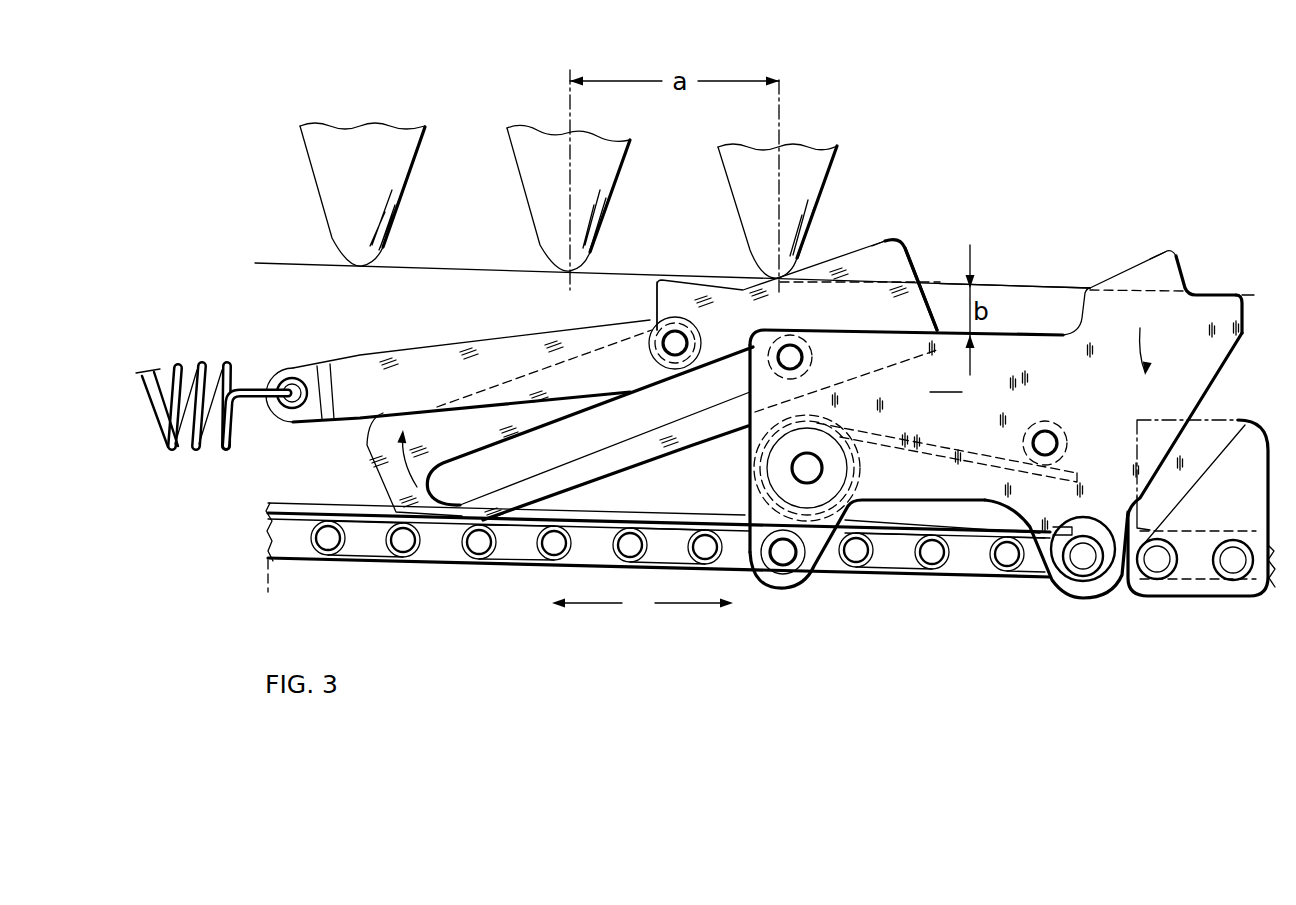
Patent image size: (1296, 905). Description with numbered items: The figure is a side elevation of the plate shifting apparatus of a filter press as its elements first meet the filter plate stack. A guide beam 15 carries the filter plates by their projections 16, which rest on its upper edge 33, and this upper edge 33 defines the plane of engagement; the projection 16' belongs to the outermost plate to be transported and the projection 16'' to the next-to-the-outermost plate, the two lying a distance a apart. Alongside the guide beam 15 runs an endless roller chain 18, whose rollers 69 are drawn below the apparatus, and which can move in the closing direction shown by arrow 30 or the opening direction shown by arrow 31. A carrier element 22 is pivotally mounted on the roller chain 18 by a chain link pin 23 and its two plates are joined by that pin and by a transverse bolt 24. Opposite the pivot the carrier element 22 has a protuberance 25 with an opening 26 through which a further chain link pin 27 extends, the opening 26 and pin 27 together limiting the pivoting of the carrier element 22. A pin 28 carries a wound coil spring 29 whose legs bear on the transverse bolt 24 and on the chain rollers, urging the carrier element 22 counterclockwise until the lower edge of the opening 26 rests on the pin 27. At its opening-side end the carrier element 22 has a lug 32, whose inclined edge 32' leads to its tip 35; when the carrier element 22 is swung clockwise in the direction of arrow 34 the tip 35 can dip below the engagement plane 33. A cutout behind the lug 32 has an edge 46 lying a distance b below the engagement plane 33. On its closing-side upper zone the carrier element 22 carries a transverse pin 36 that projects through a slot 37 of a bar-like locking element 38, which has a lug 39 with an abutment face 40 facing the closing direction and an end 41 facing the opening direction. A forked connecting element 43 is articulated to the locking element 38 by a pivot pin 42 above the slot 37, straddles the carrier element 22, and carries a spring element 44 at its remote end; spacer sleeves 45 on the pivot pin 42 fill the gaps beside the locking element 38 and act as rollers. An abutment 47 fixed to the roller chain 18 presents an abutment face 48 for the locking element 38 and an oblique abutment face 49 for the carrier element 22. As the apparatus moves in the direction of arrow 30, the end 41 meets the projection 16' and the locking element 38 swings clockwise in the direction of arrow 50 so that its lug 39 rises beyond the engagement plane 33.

The guide beam 15 is at (456, 272).
The projections 16 is at (362, 164).
The projection of the outermost filter plate 16' is at (781, 184).
The projection of the next-to-the-outermost filter plate 16'' is at (565, 177).
The roller chain 18 is at (372, 556).
The carrier element 22 is at (945, 377).
The chain link pin 23 is at (783, 565).
The transverse bolt 24 is at (1058, 440).
The protuberance 25 is at (1110, 580).
The opening 26 is at (1096, 518).
The chain link pin 27 is at (1083, 566).
The pin 28 is at (782, 474).
The coil spring 29 is at (975, 447).
The arrow indicating closing direction 30 is at (606, 609).
The arrow indicating opening direction 31 is at (678, 609).
The lug 32 is at (1169, 265).
The inclined edge 32' is at (1120, 256).
The upper edge of the guide beam 33 is at (996, 287).
The arrow indicating clockwise pivotal motion 34 is at (1140, 328).
The tip of the lug 35 is at (1168, 250).
The transverse pin 36 is at (793, 355).
The slot 37 is at (590, 437).
The locking element 38 is at (882, 243).
The lug 39 is at (675, 283).
The abutment face 40 is at (655, 297).
The end of the locking element 41 is at (915, 268).
The pivot pin 42 is at (678, 343).
The forked connecting element 43 is at (357, 368).
The spring element 44 is at (200, 362).
The spacer sleeves 45 is at (652, 333).
The edge of the cutout portion 46 is at (1043, 333).
The abutment 47 is at (1212, 523).
The abutment face 48 is at (1210, 424).
The oblique abutment face 49 is at (1190, 490).
The arrow indicating clockwise swinging of the locking element 50 is at (410, 481).
The chain roller 69 is at (800, 562).